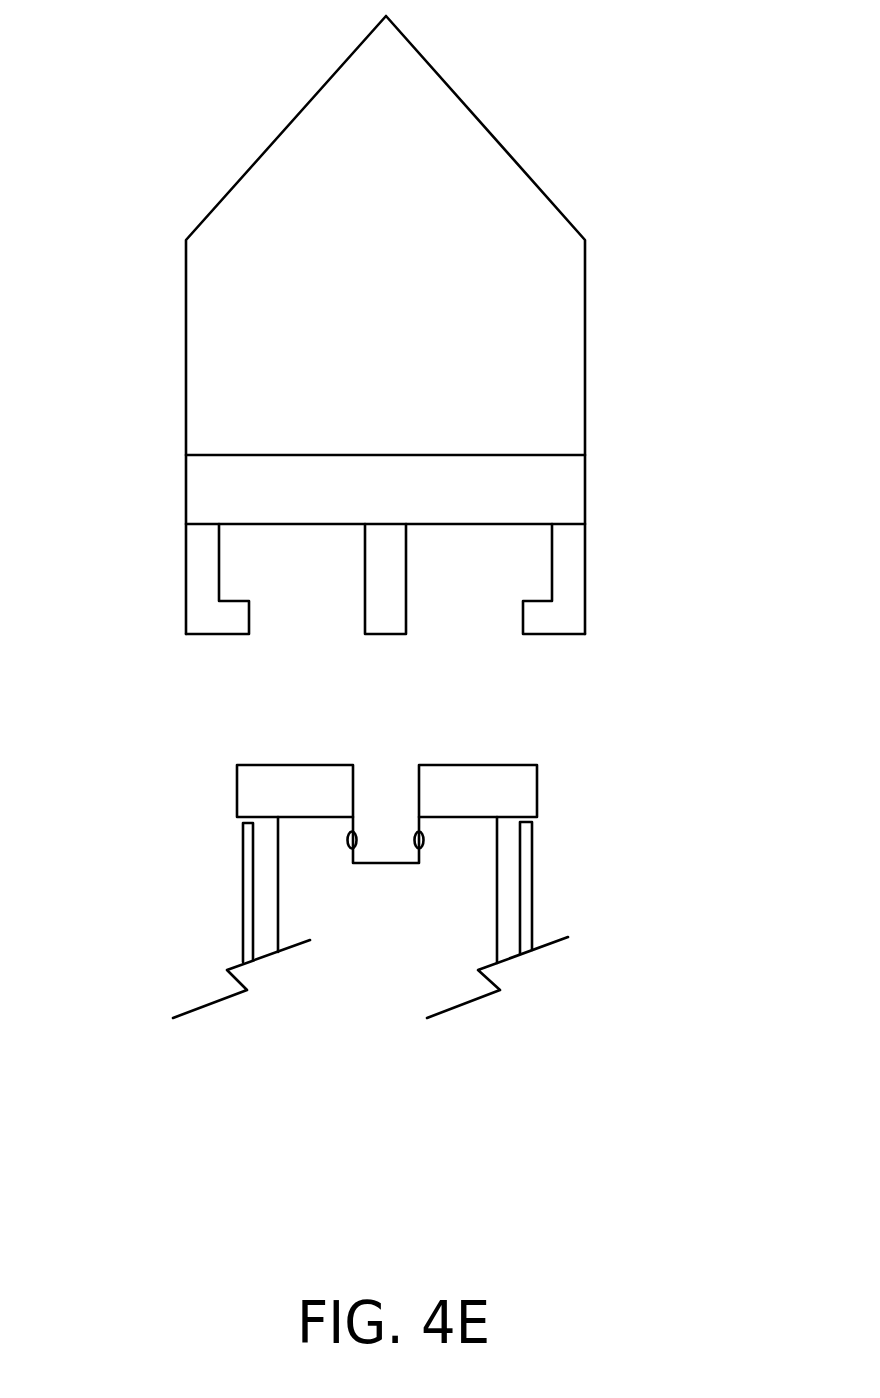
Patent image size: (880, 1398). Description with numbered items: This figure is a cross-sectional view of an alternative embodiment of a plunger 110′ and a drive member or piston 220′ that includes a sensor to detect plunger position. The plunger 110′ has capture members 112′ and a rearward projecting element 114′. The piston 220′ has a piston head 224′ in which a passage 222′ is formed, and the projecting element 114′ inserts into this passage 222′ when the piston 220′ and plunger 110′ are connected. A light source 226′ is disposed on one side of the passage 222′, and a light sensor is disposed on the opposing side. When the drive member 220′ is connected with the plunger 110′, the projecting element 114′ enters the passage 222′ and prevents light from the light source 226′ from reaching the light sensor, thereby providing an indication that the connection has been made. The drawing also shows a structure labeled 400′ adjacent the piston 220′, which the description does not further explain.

The connector body 110′ is at (595, 352).
The latch foot 112′ is at (202, 618).
The center tab 114′ is at (393, 613).
The receptacle channel 222′ is at (390, 793).
The receptacle block 224′ is at (260, 793).
The contact leg 220′ is at (509, 852).
The contact bump 226′ is at (427, 845).
The shield plate 400′ is at (530, 908).